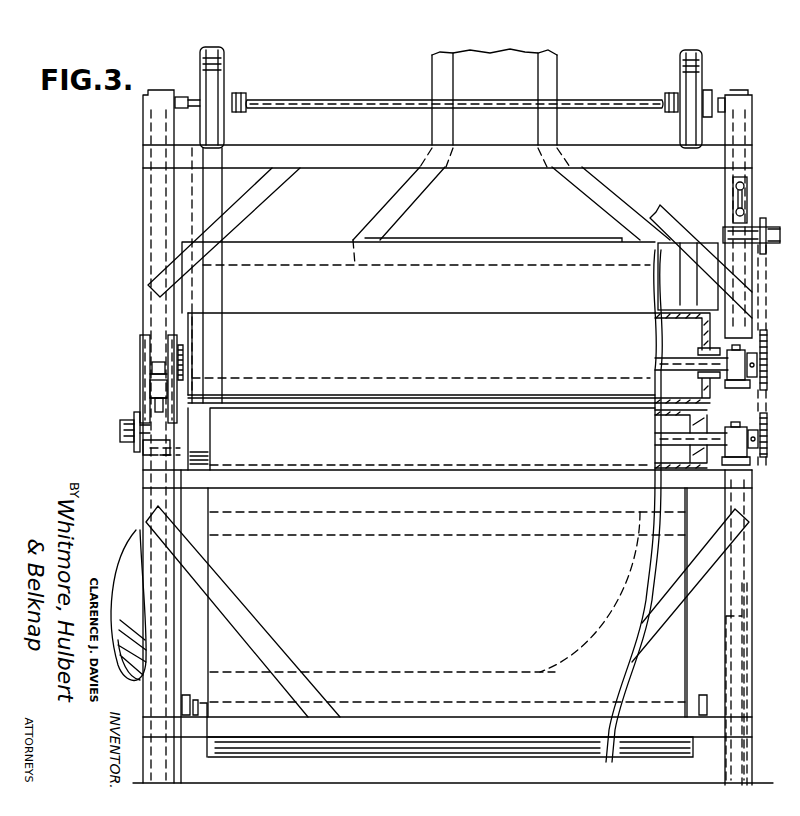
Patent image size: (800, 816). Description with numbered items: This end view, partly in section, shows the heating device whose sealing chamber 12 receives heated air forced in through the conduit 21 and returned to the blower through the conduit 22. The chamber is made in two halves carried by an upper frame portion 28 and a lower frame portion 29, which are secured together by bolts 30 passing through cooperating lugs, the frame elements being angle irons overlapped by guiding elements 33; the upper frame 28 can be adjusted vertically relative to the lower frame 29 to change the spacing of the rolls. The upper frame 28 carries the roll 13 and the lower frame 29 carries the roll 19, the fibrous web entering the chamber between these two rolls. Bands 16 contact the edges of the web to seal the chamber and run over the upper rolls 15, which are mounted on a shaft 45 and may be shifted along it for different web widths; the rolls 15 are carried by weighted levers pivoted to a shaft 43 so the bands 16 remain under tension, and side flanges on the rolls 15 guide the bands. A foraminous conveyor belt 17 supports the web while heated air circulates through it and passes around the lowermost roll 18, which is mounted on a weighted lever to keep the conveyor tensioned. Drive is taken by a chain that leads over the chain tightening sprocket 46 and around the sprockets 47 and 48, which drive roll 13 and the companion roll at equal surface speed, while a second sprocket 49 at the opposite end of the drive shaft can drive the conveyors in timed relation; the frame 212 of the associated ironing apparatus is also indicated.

The sealing chamber 12 is at (298, 240).
The roll 13 is at (598, 312).
The upper roll 15 is at (227, 83).
The band 16 is at (218, 200).
The foraminous conveyor belt 17 is at (688, 645).
The roll 18 is at (690, 752).
The roll 19 is at (709, 416).
The conduit 21 is at (557, 72).
The conduit 22 is at (140, 543).
The upper frame portion 28 is at (148, 313).
The lower frame portion 29 is at (150, 500).
The bolt 30 is at (152, 410).
The guiding element 33 is at (140, 348).
The shaft 43 is at (340, 101).
The shaft 45 is at (246, 99).
The chain tightening sprocket 46 is at (766, 224).
The sprocket 47 is at (764, 360).
The sprocket 48 is at (766, 437).
The second sprocket 49 is at (134, 448).
The frame 212 is at (799, 586).